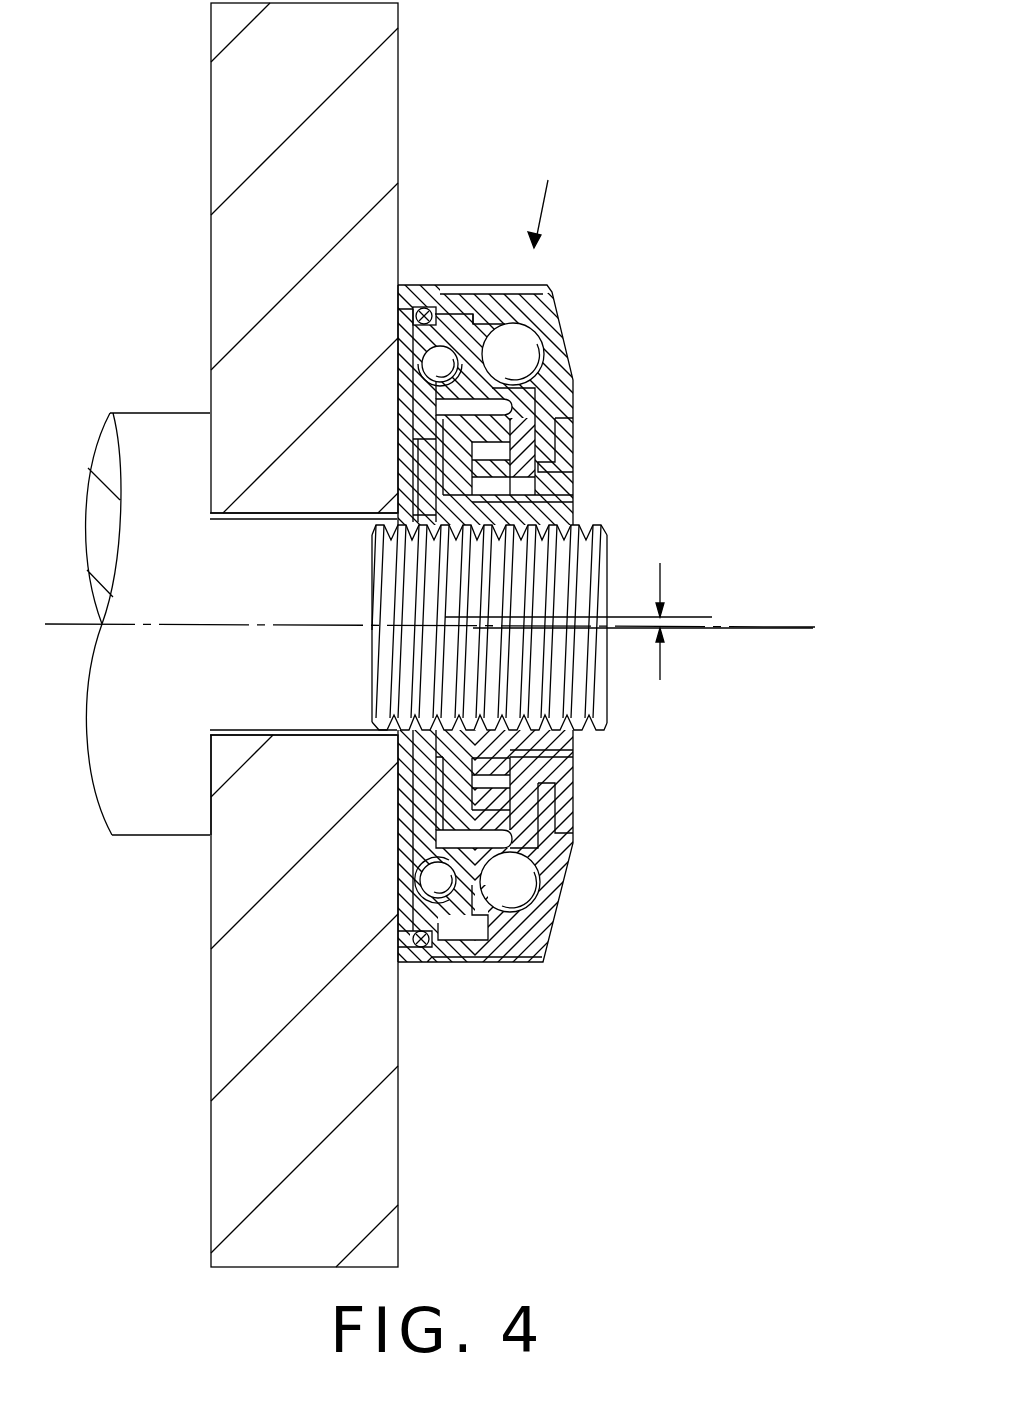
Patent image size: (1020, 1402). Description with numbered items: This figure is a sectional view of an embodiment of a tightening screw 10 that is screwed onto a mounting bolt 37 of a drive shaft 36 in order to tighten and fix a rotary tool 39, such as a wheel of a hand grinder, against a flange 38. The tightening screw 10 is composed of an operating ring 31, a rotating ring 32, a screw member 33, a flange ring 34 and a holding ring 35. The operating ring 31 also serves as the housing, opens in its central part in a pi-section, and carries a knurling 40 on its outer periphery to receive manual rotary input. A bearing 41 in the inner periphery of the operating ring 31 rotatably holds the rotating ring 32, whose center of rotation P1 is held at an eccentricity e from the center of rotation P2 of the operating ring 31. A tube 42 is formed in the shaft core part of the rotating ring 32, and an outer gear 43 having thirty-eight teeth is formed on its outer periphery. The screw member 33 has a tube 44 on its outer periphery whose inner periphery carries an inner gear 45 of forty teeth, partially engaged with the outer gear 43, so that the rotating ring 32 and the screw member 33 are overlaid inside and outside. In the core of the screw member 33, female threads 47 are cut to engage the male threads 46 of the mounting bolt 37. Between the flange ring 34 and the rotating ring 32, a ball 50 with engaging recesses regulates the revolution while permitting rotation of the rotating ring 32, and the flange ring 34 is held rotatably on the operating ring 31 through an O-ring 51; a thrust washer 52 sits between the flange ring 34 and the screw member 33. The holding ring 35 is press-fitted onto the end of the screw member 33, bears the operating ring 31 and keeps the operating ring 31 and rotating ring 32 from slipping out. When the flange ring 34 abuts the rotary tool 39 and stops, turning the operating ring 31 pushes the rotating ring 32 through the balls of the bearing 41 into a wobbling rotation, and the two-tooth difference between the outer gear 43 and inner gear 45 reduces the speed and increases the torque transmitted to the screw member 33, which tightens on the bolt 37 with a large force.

The tightening screw 10 is at (552, 191).
The operating ring 31 is at (547, 288).
The rotating ring 32 is at (441, 342).
The screw member 33 is at (460, 439).
The flange ring 34 is at (425, 350).
The holding ring 35 is at (570, 440).
The drive shaft 36 is at (122, 795).
The mounting bolt 37 is at (238, 710).
The flange 38 is at (212, 823).
The rotary tool 39 is at (233, 1110).
The knurling 40 is at (515, 965).
The bearing 41 is at (528, 345).
The tube 42 is at (545, 505).
The outer gear 43 is at (497, 800).
The tube 44 is at (513, 408).
The inner gear 45 is at (568, 850).
The male threads 46 is at (607, 720).
The female threads 47 is at (553, 750).
The ball 50 is at (435, 363).
The O-ring 51 is at (420, 950).
The thrust washer 52 is at (438, 478).
The center of rotation of the rotating ring P1 is at (705, 613).
The center of rotation of the operating ring P2 is at (773, 628).
The eccentricity e is at (660, 605).